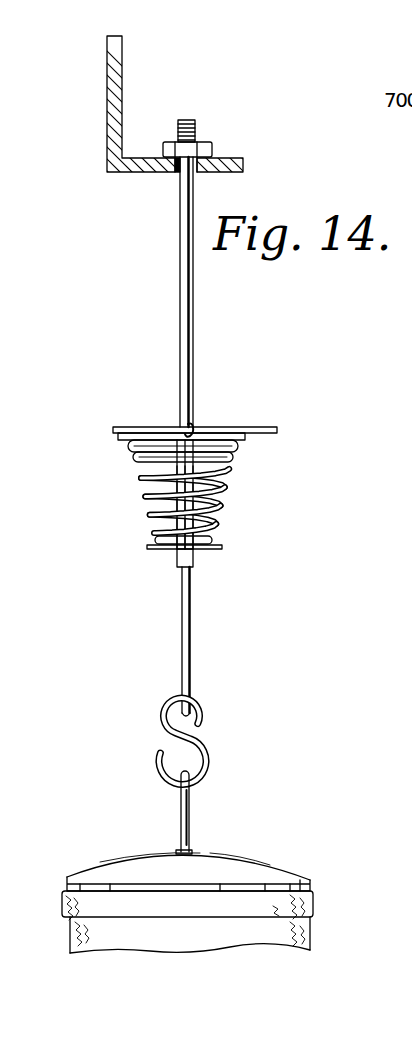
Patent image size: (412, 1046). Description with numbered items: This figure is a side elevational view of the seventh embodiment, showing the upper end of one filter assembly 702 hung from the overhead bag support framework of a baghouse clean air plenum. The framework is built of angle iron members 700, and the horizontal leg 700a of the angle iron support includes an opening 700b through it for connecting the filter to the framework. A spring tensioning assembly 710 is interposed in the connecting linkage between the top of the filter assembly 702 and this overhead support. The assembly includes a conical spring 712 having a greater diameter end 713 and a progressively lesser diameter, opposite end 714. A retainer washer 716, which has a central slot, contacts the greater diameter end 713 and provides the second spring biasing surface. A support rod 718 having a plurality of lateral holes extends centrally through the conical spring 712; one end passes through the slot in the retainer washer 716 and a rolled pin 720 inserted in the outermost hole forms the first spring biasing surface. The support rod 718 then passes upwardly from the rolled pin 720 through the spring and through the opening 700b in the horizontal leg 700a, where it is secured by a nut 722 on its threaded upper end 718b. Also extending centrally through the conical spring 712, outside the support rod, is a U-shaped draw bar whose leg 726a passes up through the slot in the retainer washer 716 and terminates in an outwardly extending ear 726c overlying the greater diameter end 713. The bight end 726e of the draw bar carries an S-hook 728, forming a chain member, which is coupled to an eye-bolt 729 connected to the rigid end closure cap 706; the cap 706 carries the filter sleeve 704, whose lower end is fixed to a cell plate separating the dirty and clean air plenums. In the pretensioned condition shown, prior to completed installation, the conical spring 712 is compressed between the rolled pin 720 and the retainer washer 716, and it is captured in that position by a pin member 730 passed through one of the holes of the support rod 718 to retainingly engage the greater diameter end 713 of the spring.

The angle iron member 700 is at (146, 74).
The horizontal leg 700a is at (244, 167).
The opening 700b is at (176, 174).
The support rod 718 is at (193, 305).
The threaded upper end 718b is at (190, 121).
The nut 722 is at (204, 149).
The spring tensioning assembly 710 is at (108, 394).
The outwardly extending ear 726c is at (194, 427).
The pin member 730 is at (278, 430).
The retainer washer 716 is at (246, 441).
The greater diameter end 713 is at (128, 446).
The conical spring 712 is at (141, 485).
The lesser diameter end 714 is at (152, 541).
The rolled pin 720 is at (223, 548).
The draw bar leg 726a is at (191, 612).
The bight end 726e is at (188, 703).
The S-hook 728 is at (212, 745).
The eye-bolt 729 is at (191, 804).
The filter assembly 702 is at (120, 844).
The end closure cap 706 is at (260, 873).
The filter sleeve 704 is at (305, 934).